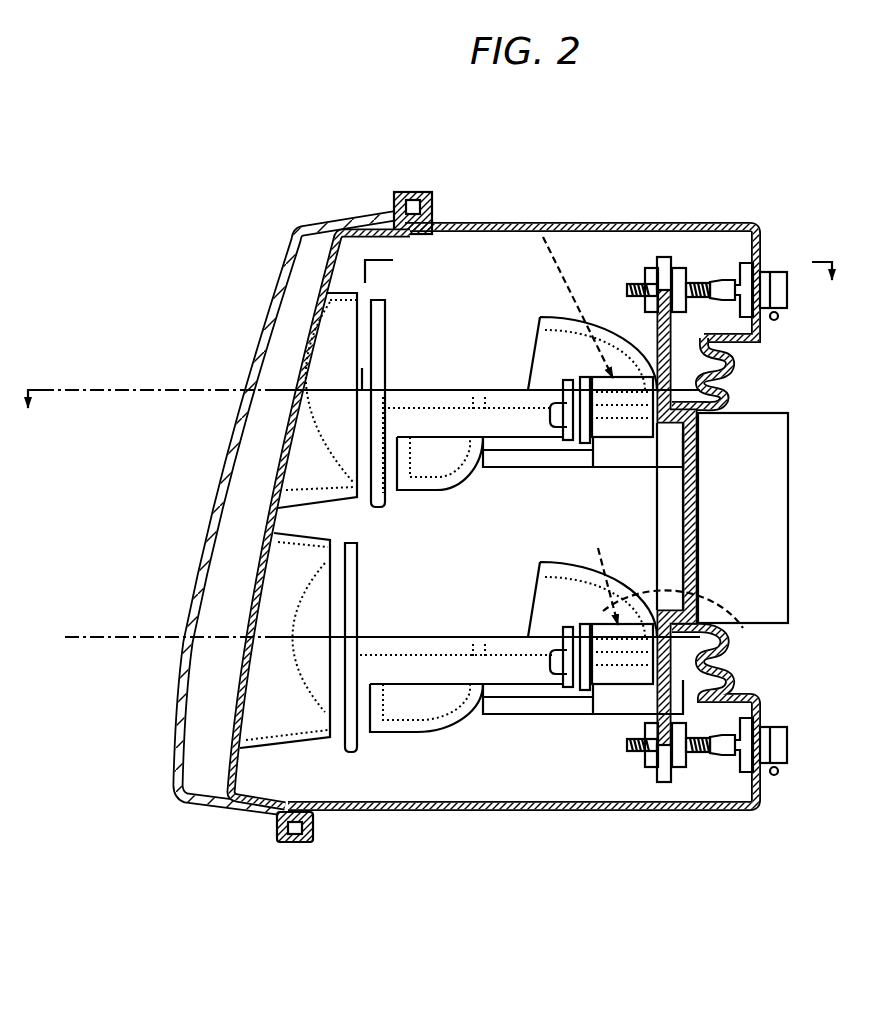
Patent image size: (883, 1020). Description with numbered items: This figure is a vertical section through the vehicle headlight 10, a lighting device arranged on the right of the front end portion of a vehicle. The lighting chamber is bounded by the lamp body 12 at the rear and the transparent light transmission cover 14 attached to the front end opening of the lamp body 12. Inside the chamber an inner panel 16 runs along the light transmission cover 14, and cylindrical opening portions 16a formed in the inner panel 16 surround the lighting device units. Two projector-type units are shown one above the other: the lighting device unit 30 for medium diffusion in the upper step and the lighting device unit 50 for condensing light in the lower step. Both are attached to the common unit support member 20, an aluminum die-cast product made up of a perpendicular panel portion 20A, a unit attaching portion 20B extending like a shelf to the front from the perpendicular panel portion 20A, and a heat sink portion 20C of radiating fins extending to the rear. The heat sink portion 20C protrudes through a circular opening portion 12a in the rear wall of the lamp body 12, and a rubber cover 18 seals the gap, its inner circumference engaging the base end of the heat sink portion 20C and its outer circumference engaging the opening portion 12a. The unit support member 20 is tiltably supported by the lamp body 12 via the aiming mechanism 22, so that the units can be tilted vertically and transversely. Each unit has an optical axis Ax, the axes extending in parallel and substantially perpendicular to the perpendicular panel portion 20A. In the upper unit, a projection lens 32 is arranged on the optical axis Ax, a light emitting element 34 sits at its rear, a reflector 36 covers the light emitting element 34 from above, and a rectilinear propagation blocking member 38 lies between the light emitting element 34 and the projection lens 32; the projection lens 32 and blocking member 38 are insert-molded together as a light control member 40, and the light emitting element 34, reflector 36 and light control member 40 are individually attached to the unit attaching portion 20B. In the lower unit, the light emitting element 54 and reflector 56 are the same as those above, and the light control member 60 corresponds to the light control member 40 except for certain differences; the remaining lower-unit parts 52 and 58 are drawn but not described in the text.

The vehicle headlight 10 is at (235, 236).
The lamp body 12 is at (772, 243).
The circular opening portion 12a is at (732, 365).
The light transmission cover 14 is at (250, 343).
The inner panel 16 is at (255, 563).
The cylindrical opening portion 16a is at (295, 718).
The rubber cover 18 is at (730, 386).
The unit support member 20 is at (702, 577).
The perpendicular panel portion 20A is at (700, 503).
The unit attaching portion 20B is at (633, 428).
The heat sink portion 20C is at (768, 505).
The aiming mechanism 22 is at (652, 262).
The lighting device unit for medium diffusion 30 is at (517, 400).
The projection lens 32 is at (375, 330).
The light emitting element 34 is at (543, 237).
The reflector 36 is at (557, 327).
The rectilinear propagation blocking member 38 is at (487, 303).
The light control member 40 is at (469, 481).
The lighting device unit for condensing light 50 is at (470, 562).
The second lamp unit reflector plate 52 is at (350, 592).
The light emitting element 54 is at (745, 630).
The reflector 56 is at (543, 567).
The second light source 58 is at (505, 650).
The light control member 60 is at (468, 724).
The optical axis Ax is at (150, 393).